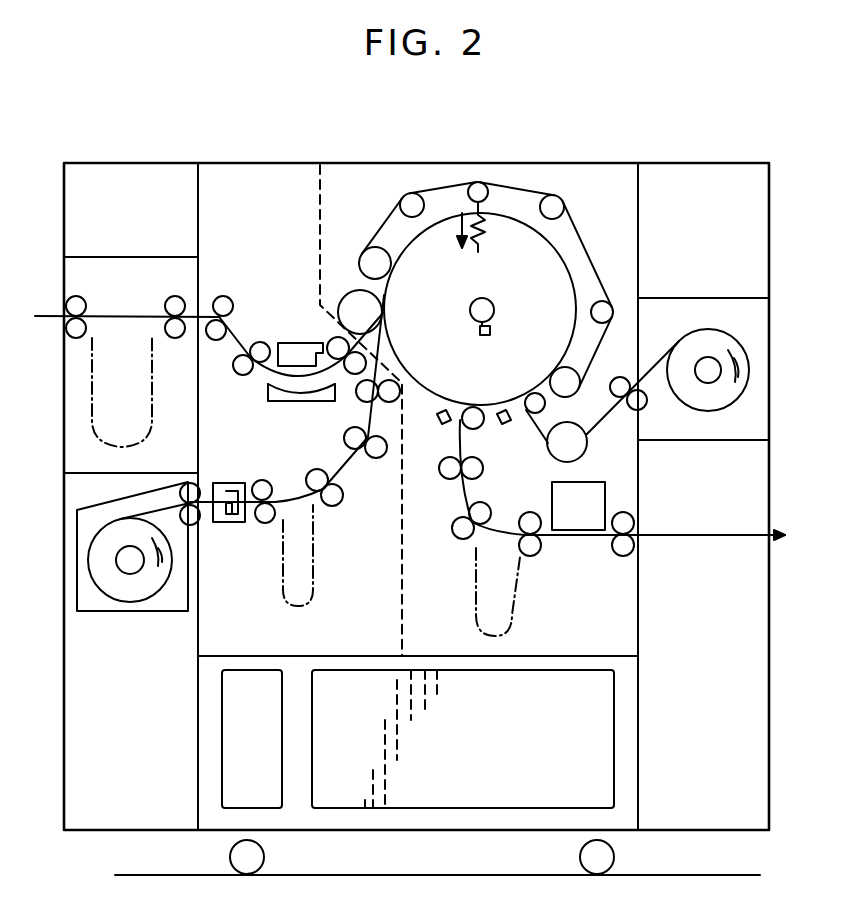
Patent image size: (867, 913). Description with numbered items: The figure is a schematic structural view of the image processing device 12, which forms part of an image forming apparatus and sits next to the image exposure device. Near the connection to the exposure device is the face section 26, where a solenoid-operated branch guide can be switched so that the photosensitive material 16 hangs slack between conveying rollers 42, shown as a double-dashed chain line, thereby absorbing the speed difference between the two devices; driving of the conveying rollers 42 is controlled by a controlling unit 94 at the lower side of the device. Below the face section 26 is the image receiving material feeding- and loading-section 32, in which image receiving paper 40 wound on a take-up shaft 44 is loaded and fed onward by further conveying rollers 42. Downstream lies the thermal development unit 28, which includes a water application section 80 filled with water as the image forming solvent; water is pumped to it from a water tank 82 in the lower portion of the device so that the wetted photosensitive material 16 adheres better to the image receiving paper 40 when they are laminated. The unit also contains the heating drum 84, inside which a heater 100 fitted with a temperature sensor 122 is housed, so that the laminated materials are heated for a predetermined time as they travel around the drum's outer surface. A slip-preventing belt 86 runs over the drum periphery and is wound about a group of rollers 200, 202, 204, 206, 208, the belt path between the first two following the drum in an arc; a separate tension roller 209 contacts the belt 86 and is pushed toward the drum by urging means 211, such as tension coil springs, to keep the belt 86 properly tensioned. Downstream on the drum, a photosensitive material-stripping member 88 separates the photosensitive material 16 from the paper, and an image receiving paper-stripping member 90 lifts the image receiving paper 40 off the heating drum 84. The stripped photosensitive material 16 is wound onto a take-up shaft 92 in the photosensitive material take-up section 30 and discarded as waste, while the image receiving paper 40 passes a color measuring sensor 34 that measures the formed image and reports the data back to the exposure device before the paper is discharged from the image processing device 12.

The image processing device 12 is at (673, 141).
The photosensitive material 16 is at (52, 316).
The face section 26 is at (115, 257).
The thermal development unit 28 is at (516, 238).
The photosensitive material take-up section 30 is at (766, 322).
The image receiving material feeding- and loading-section 32 is at (95, 612).
The color measuring sensor 34 is at (580, 482).
The image receiving paper 40 is at (303, 486).
The conveying rollers 42 is at (80, 326).
The take-up shaft 44 is at (135, 570).
The water application section 80 is at (270, 400).
The water tank 82 is at (222, 765).
The heating drum 84 is at (440, 385).
The belt 86 is at (580, 236).
The photosensitive material-stripping member 88 is at (505, 423).
The image receiving paper-stripping member 90 is at (440, 422).
The take-up shaft 92 is at (710, 372).
The controlling unit 94 is at (615, 730).
The heater 100 is at (483, 308).
The temperature sensor 122 is at (486, 334).
The roller 200 is at (372, 262).
The roller 202 is at (566, 382).
The roller 204 is at (606, 310).
The roller 206 is at (556, 200).
The roller 208 is at (420, 198).
The tension roller 209 is at (481, 190).
The urging means 211 is at (462, 248).